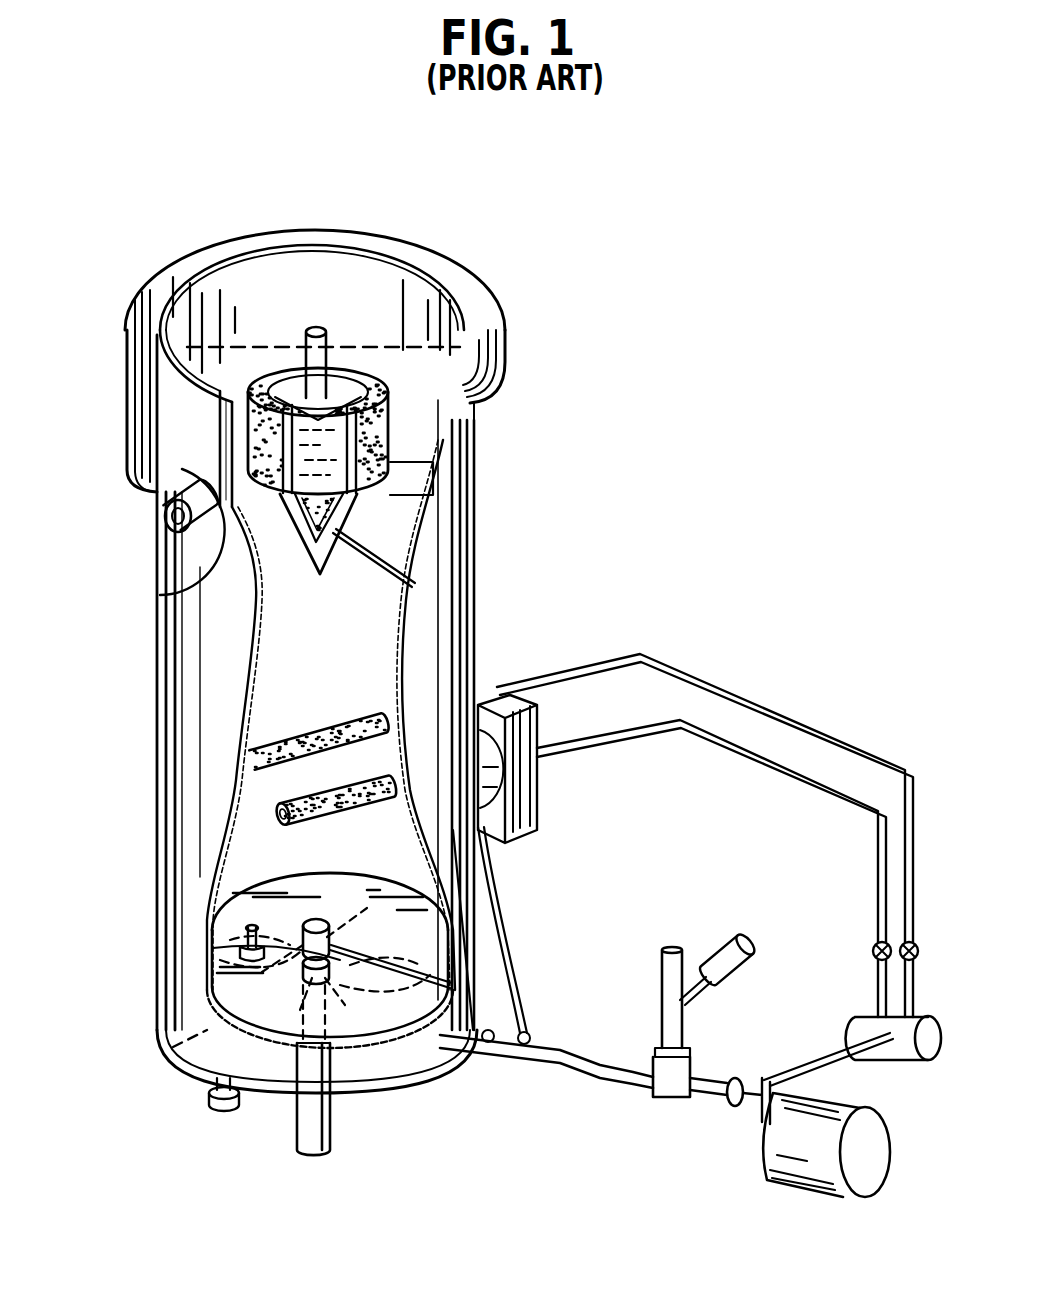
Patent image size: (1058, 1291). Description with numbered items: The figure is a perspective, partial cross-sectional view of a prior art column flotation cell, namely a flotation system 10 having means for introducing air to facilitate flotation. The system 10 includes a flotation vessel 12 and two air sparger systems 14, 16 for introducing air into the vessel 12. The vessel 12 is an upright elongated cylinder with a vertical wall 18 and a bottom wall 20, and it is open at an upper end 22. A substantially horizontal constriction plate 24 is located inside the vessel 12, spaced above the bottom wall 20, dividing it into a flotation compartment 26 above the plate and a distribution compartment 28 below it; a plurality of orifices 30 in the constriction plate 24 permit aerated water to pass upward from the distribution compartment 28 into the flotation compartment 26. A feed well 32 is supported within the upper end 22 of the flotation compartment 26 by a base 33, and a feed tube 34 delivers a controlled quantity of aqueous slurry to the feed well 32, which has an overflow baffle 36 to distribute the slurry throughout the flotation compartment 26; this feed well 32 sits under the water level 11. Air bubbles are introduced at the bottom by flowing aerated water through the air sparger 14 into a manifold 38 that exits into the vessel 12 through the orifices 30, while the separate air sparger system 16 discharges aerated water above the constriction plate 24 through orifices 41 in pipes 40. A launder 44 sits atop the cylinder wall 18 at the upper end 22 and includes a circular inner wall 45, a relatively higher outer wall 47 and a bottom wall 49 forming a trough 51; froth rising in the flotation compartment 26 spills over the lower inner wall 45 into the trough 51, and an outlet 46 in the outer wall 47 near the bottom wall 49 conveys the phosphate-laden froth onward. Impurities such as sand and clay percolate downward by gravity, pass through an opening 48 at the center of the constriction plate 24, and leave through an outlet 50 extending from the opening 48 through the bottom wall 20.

The flotation system 10 is at (689, 340).
The water level 11 is at (478, 360).
The flotation vessel 12 is at (157, 824).
The air sparger system 14 is at (655, 1120).
The air sparger system 16 is at (785, 680).
The vertical wall 18 is at (478, 557).
The bottom wall 20 is at (198, 1073).
The upper end 22 is at (380, 318).
The constriction plate 24 is at (213, 982).
The flotation compartment 26 is at (298, 681).
The distribution compartment 28 is at (333, 1040).
The orifices 30 is at (430, 950).
The feed well 32 is at (413, 431).
The base 33 is at (393, 493).
The feed tube 34 is at (326, 308).
The overflow baffle 36 is at (275, 420).
The manifold 38 is at (173, 1047).
The pipes 40 is at (334, 787).
The orifices 41 is at (258, 768).
The launder 44 is at (512, 326).
The circular inner wall 45 is at (227, 410).
The outlet 46 is at (160, 534).
The outer wall 47 is at (118, 307).
The opening 48 is at (238, 940).
The bottom wall 49 is at (190, 593).
The outlet 50 is at (337, 1120).
The trough 51 is at (167, 492).